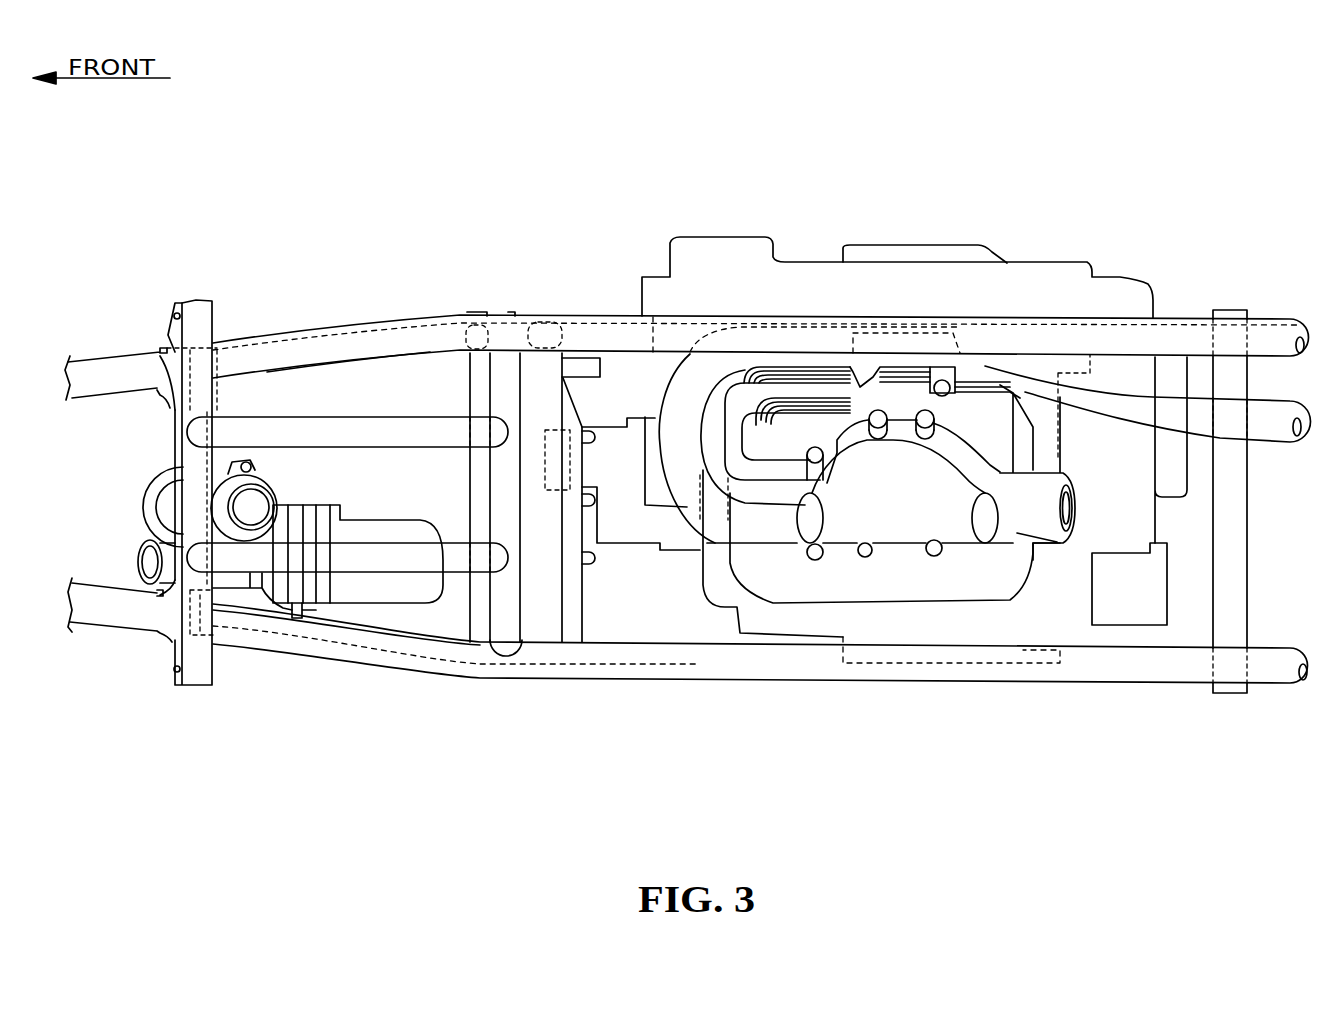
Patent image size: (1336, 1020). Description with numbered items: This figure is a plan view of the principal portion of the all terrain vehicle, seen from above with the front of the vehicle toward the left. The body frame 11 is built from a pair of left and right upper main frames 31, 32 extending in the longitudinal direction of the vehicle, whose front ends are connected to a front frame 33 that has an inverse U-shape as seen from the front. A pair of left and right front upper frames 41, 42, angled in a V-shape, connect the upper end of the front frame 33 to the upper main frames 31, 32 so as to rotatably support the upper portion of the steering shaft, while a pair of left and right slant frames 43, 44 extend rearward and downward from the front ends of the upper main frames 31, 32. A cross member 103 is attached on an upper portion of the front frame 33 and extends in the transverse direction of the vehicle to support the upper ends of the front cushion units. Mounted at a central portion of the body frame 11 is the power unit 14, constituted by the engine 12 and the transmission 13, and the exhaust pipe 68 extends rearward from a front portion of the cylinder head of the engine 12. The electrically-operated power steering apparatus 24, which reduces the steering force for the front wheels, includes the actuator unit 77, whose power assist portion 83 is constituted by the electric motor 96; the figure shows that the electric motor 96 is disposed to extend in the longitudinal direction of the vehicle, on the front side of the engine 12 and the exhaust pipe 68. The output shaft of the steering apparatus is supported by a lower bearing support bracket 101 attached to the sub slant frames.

The body frame 11 is at (273, 333).
The engine 12 is at (888, 545).
The transmission 13 is at (940, 625).
The power unit 14 is at (878, 240).
The electrically-operated power steering apparatus 24 is at (133, 498).
The upper main frame 31 is at (1060, 665).
The upper main frame 32 is at (1066, 336).
The front frame 33 is at (106, 624).
The front upper frame 41 is at (455, 562).
The front upper frame 42 is at (447, 340).
The slant frame 43 is at (428, 667).
The slant frame 44 is at (441, 425).
The exhaust pipe 68 is at (687, 470).
The actuator unit 77 is at (300, 606).
The power assist portion 83 is at (265, 608).
The electric motor 96 is at (358, 592).
The lower bearing support bracket 101 is at (547, 338).
The cross member 103 is at (190, 680).